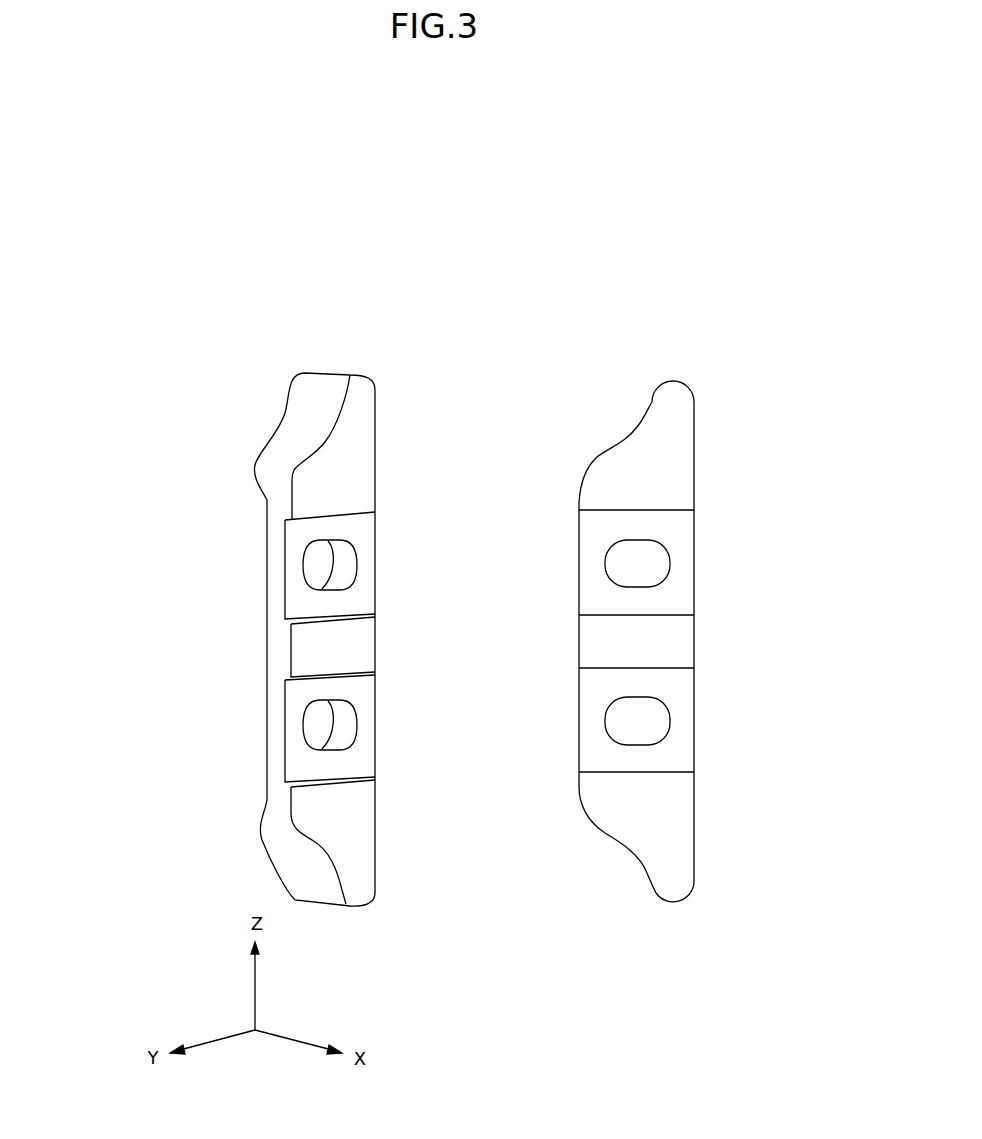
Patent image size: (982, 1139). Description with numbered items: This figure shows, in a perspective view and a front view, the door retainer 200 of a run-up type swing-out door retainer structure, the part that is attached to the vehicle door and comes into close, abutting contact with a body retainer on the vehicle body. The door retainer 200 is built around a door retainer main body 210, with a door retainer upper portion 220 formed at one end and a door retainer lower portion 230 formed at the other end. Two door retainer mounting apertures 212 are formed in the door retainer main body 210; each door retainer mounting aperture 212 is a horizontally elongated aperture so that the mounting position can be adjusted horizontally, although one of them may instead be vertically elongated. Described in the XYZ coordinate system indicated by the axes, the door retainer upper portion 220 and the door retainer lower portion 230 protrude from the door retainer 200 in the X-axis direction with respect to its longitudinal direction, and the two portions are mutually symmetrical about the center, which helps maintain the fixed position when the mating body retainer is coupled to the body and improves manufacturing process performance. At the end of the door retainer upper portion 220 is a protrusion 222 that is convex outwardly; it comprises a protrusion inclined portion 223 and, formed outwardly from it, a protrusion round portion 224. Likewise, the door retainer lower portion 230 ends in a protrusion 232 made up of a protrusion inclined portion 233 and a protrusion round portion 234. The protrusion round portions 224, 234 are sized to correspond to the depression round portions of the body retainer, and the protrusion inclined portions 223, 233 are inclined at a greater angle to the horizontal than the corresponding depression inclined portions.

The door retainer 200 is at (148, 587).
The door retainer main body 210 is at (270, 640).
The door retainer mounting aperture 212 is at (650, 722).
The door retainer upper portion 220 is at (272, 485).
The protrusion 222 is at (623, 243).
The protrusion inclined portion 223 is at (593, 455).
The protrusion round portion 224 is at (668, 381).
The door retainer lower portion 230 is at (272, 825).
The protrusion 232 is at (623, 1040).
The protrusion inclined portion 233 is at (593, 827).
The protrusion round portion 234 is at (672, 902).